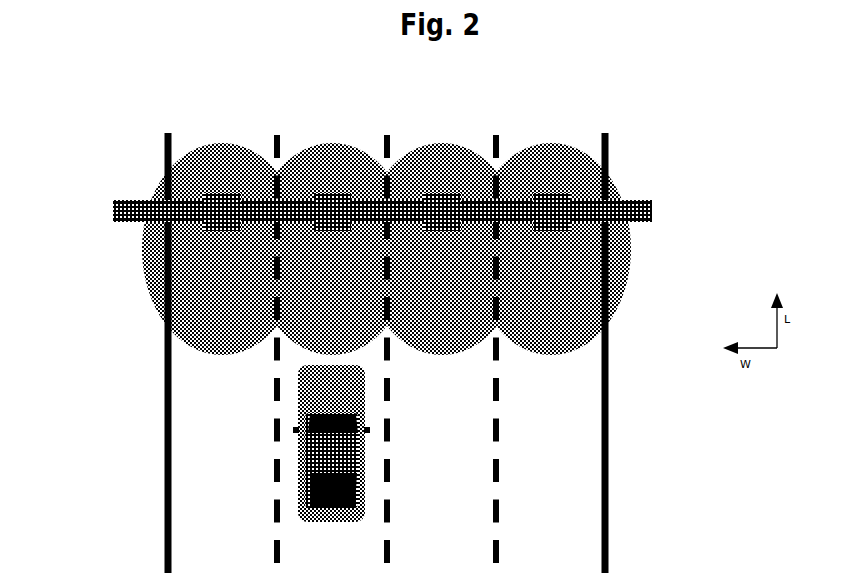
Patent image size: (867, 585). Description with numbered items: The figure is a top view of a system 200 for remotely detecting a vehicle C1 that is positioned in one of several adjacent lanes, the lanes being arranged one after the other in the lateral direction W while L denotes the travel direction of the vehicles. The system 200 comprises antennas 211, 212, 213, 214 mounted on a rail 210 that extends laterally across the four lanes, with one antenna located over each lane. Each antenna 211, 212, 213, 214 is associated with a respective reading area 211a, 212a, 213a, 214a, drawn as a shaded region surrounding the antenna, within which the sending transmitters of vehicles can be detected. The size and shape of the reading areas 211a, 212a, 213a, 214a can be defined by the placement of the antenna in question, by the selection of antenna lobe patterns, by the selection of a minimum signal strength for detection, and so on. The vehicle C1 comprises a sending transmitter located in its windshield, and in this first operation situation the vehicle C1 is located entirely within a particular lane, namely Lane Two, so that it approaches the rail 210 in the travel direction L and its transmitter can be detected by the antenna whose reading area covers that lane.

The system 200 is at (748, 192).
The rail 210 is at (653, 208).
The antenna 211 is at (243, 219).
The antenna 212 is at (335, 230).
The antenna 213 is at (447, 232).
The antenna 214 is at (557, 231).
The reading area 211a is at (232, 143).
The reading area 212a is at (340, 143).
The reading area 213a is at (463, 148).
The reading area 214a is at (613, 182).
The vehicle C1 is at (365, 456).